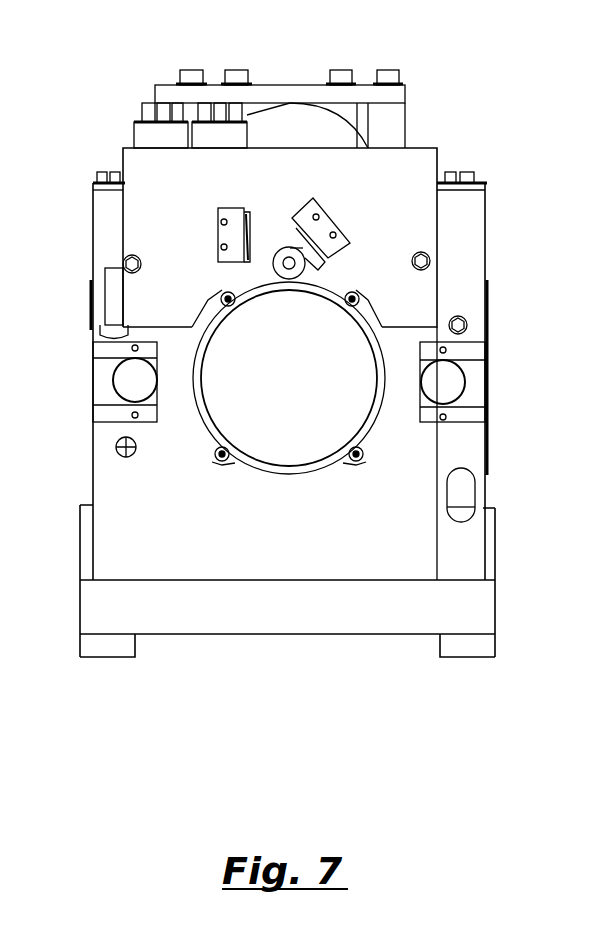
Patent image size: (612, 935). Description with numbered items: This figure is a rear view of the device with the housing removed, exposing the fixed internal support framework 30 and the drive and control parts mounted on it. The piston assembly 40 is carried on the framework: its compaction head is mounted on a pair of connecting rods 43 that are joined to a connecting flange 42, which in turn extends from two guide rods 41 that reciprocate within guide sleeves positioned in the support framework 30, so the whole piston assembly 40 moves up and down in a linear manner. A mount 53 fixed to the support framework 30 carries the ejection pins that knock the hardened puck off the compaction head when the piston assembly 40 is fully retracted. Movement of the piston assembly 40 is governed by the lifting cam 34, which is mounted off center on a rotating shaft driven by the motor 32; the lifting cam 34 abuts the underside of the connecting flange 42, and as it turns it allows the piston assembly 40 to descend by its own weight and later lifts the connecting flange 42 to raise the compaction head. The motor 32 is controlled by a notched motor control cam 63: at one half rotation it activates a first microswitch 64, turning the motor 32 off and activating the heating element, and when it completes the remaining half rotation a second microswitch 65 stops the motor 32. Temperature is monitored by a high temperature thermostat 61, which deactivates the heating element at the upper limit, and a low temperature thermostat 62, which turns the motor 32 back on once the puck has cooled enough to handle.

The fixed internal support framework 30 is at (405, 475).
The motor 32 is at (300, 370).
The lifting cam 34 is at (280, 118).
The piston assembly 40 is at (331, 75).
The guide rods 41 is at (389, 120).
The connecting flange 42 is at (296, 110).
The connecting rods 43 is at (342, 110).
The mount 53 is at (105, 178).
The high temperature thermostat 61 is at (443, 380).
The low temperature thermostat 62 is at (135, 378).
The motor control cam 63 is at (285, 250).
The first microswitch 64 is at (320, 222).
The second microswitch 65 is at (235, 222).